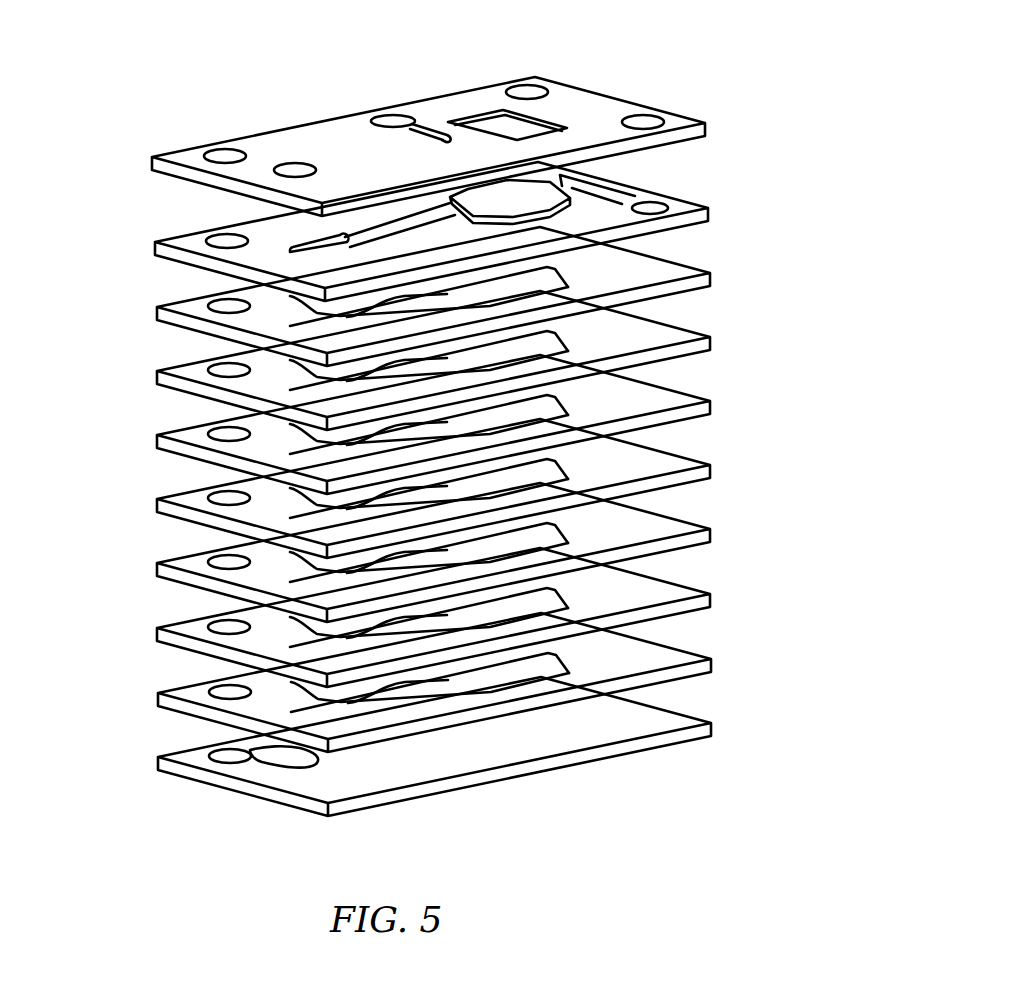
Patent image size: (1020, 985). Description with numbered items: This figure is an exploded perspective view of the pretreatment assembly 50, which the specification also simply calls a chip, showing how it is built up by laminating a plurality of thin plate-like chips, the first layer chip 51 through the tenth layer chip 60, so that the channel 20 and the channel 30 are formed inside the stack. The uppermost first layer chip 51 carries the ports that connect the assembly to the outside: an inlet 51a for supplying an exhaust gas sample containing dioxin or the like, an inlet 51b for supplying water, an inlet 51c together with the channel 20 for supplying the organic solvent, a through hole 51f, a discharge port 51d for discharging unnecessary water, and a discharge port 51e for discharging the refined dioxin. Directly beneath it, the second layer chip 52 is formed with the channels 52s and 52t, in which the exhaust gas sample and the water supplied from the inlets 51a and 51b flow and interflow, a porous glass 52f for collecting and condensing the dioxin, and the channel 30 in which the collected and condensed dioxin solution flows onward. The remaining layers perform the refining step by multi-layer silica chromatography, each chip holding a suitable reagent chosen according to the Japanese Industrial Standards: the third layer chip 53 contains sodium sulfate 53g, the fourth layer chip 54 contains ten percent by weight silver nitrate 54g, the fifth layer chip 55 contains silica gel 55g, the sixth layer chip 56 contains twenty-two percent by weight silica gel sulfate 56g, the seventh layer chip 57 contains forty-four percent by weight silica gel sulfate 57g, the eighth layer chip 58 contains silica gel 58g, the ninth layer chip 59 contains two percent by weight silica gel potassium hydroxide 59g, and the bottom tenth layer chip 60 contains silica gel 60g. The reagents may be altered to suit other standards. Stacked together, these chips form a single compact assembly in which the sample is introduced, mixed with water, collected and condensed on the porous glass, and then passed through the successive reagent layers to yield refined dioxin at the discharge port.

The channel 20 is at (432, 137).
The channel 30 is at (293, 248).
The pretreatment assembly 50 is at (722, 88).
The first layer chip 51 is at (434, 108).
The inlet 51a is at (527, 92).
The inlet 51b is at (645, 118).
The inlet 51c is at (392, 122).
The discharge port 51d is at (295, 170).
The discharge port 51e is at (225, 156).
The through hole 51f is at (487, 125).
The second layer chip 52 is at (430, 227).
The porous glass 52f is at (205, 237).
The channel 52s is at (578, 177).
The channel 52t is at (665, 196).
The third layer chip 53 is at (430, 296).
The sodium sulfate 53g is at (447, 299).
The fourth layer chip 54 is at (430, 360).
The silver nitrate 54g is at (447, 363).
The fifth layer chip 55 is at (430, 424).
The silica gel 55g is at (447, 427).
The sixth layer chip 56 is at (430, 488).
The silica gel sulfate 56g is at (447, 491).
The seventh layer chip 57 is at (430, 552).
The silica gel sulfate 57g is at (447, 555).
The eighth layer chip 58 is at (430, 621).
The silica gel 58g is at (447, 620).
The ninth layer chip 59 is at (696, 651).
The silica gel potassium hydroxide 59g is at (240, 748).
The tenth layer chip 60 is at (430, 747).
The silica gel 60g is at (480, 742).